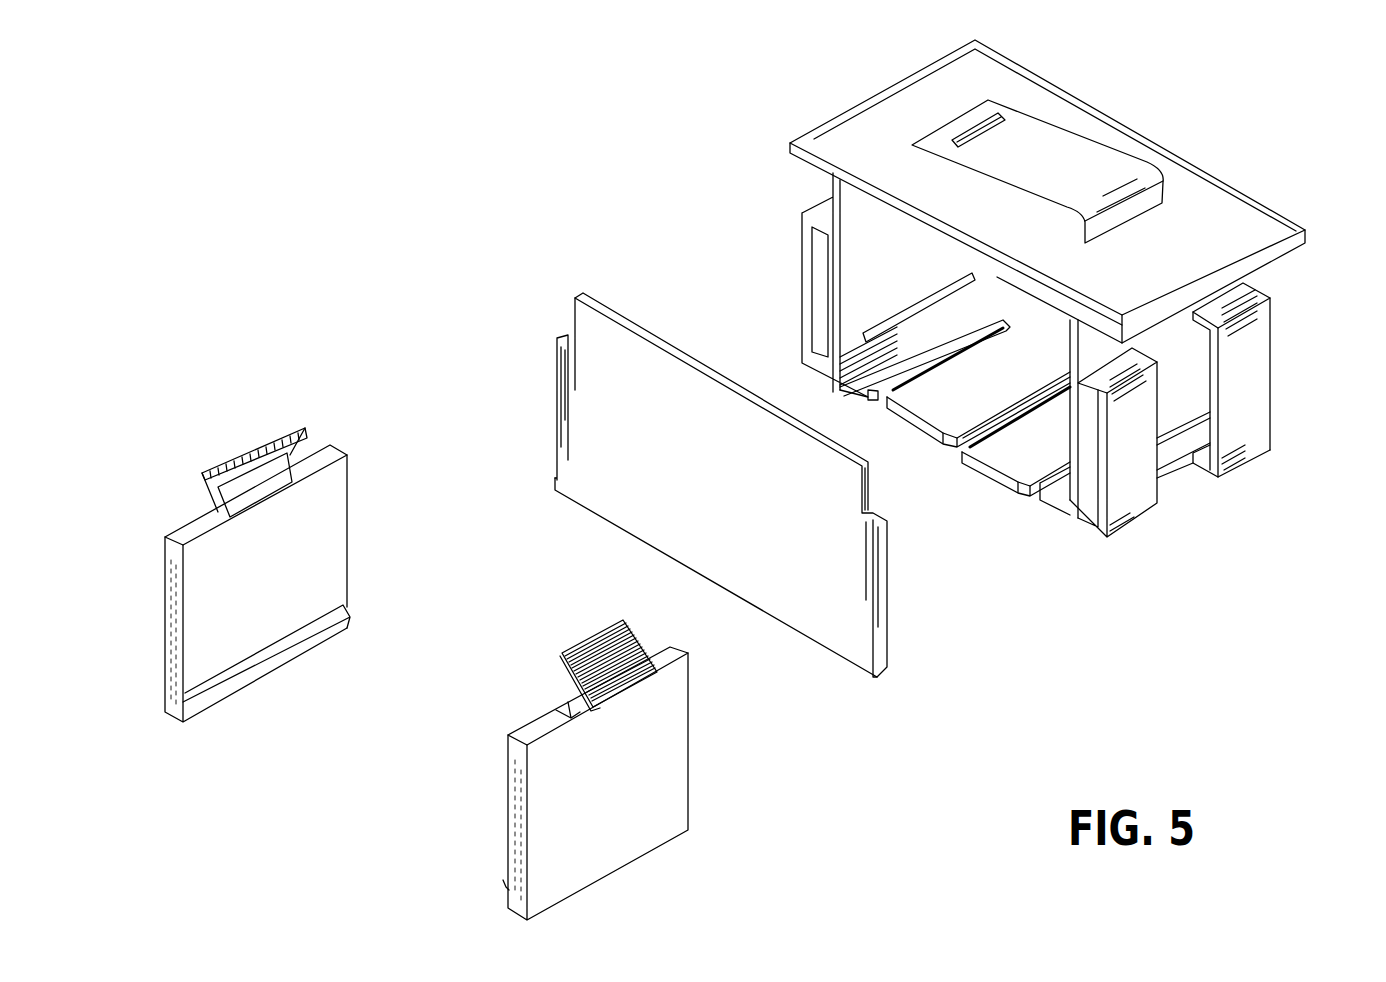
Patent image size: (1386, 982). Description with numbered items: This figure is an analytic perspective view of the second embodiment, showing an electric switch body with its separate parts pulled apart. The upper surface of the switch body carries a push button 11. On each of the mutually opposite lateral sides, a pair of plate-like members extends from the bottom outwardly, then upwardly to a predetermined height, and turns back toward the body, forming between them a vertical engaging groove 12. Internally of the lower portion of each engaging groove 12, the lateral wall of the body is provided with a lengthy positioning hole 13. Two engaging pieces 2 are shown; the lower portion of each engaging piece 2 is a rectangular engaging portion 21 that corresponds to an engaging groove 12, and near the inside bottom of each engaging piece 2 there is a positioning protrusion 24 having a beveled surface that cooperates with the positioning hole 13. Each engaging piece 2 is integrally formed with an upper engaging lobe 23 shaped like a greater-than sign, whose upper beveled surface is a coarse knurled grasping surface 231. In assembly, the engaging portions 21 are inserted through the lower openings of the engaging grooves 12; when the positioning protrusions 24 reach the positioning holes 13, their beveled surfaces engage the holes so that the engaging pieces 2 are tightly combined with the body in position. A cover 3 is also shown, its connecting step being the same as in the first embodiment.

The push button 11 is at (1070, 158).
The engaging groove 12 is at (1188, 480).
The positioning hole 13 is at (1197, 425).
The cover 3 is at (648, 499).
The engaging piece 2 is at (633, 770).
The engaging portion 21 is at (667, 805).
The engaging lobe 23 is at (581, 713).
The knurled grasping surface 231 is at (633, 640).
The positioning protrusion 24 is at (253, 665).